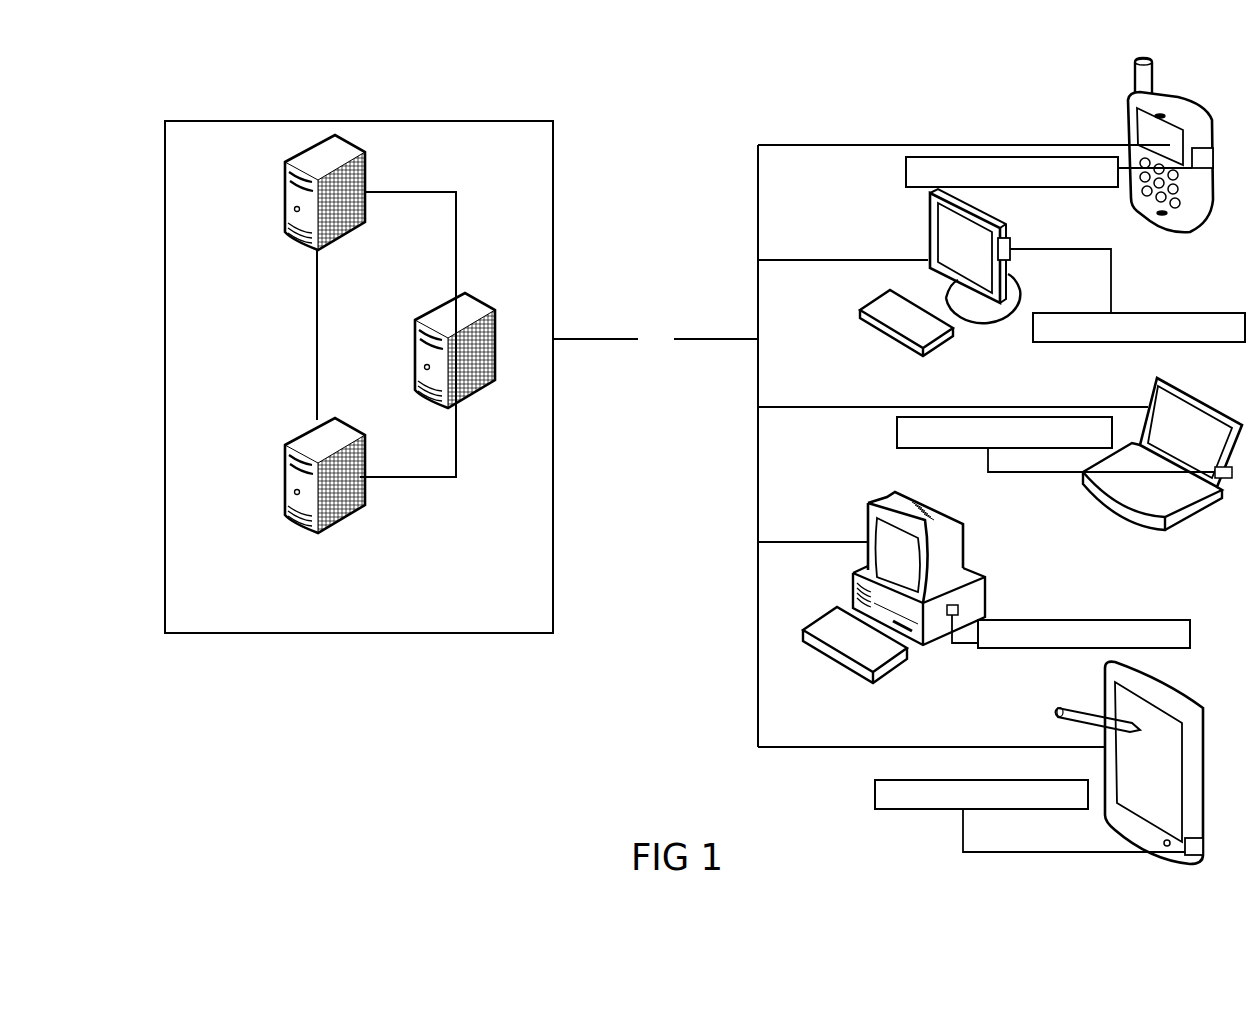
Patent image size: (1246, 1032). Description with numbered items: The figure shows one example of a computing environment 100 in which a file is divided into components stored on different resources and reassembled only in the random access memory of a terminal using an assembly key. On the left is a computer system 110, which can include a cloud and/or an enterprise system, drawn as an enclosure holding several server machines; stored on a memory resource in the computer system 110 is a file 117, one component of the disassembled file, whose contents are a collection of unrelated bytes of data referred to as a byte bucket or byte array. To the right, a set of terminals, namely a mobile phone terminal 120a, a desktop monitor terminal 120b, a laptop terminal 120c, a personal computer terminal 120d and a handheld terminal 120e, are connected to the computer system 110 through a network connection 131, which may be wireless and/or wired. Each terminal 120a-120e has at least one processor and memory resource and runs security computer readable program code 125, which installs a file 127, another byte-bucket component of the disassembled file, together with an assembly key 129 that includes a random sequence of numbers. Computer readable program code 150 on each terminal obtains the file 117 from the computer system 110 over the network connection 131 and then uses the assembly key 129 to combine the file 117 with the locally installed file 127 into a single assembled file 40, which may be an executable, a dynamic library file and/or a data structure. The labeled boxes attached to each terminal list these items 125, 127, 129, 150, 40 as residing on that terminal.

The computing environment 100 is at (322, 811).
The computer system 110 is at (359, 363).
The file 117 is at (325, 475).
The network connection 131 is at (861, 446).
The terminal 120a is at (1170, 160).
The terminal 120b is at (940, 282).
The terminal 120c is at (1162, 465).
The terminal 120d is at (894, 599).
The terminal 120e is at (1130, 776).
The security computer readable program code 125 is at (1060, 504).
The file 127 is at (1060, 504).
The assembly key 129 is at (1060, 504).
The computer readable program code 150 is at (1060, 504).
The assembled file 40 is at (1060, 504).